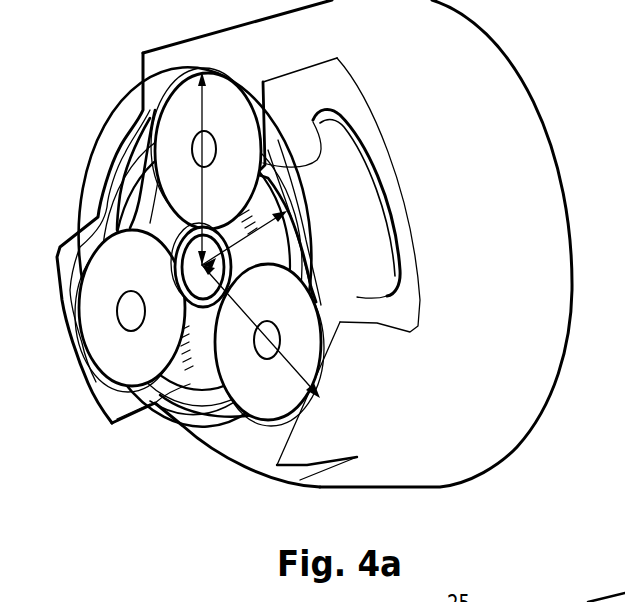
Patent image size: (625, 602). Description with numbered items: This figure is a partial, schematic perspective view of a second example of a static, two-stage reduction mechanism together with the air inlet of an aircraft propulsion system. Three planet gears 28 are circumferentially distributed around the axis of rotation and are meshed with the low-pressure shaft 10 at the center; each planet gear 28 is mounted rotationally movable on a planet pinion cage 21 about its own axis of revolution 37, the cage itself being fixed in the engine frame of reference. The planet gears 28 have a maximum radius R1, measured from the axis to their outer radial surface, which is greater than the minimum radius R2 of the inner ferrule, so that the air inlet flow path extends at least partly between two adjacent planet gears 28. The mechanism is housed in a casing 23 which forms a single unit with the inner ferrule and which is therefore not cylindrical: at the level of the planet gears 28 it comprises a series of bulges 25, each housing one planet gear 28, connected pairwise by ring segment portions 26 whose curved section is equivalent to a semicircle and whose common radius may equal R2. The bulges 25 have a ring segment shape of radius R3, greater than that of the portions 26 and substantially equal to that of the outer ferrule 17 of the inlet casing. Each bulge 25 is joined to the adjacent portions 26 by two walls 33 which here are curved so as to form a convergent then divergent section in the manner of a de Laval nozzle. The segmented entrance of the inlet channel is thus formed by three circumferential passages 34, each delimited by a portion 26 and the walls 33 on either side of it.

The low-pressure shaft 10 is at (182, 233).
The outer ferrule 17 is at (314, 243).
The planet pinion cage 21 is at (190, 390).
The casing 23 is at (200, 428).
The bulge 25 is at (100, 410).
The ring segment portion 26 is at (358, 192).
The planet gear 28 is at (173, 100).
The wall 33 is at (352, 295).
The passage 34 is at (340, 104).
The axis of revolution 37 is at (192, 148).
The maximum radius of the planet gears R1 is at (205, 107).
The minimum radius of the inner ferrule R2 is at (258, 243).
The radius of the bulges R3 is at (302, 377).